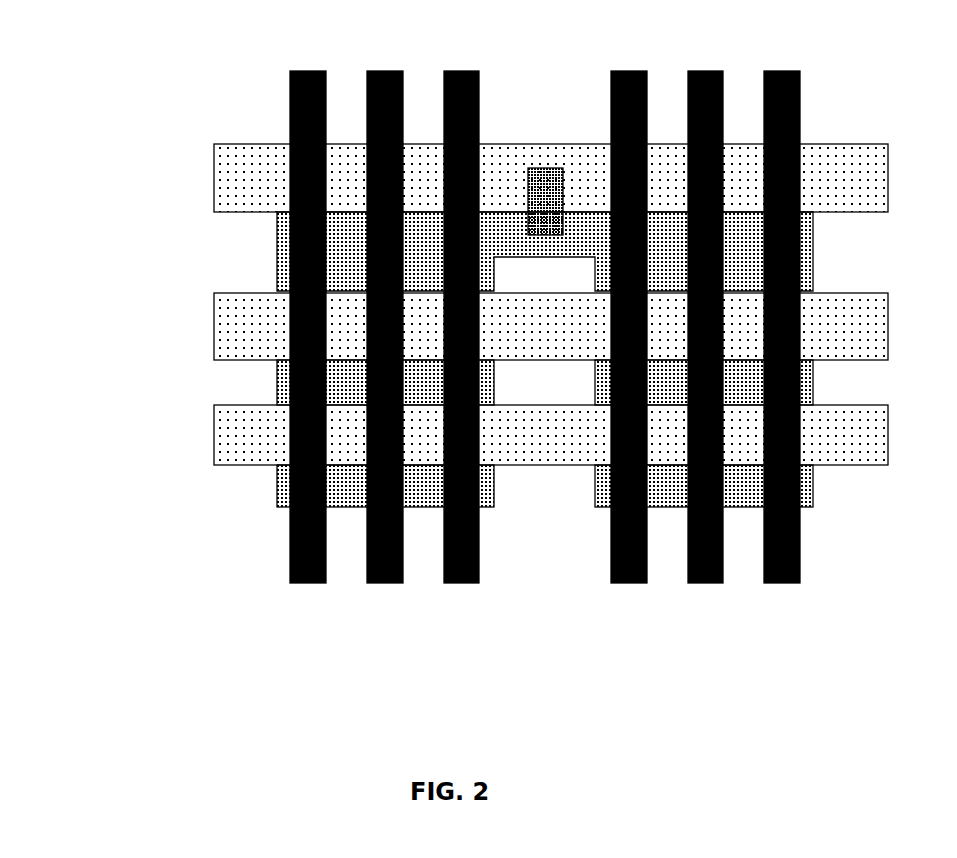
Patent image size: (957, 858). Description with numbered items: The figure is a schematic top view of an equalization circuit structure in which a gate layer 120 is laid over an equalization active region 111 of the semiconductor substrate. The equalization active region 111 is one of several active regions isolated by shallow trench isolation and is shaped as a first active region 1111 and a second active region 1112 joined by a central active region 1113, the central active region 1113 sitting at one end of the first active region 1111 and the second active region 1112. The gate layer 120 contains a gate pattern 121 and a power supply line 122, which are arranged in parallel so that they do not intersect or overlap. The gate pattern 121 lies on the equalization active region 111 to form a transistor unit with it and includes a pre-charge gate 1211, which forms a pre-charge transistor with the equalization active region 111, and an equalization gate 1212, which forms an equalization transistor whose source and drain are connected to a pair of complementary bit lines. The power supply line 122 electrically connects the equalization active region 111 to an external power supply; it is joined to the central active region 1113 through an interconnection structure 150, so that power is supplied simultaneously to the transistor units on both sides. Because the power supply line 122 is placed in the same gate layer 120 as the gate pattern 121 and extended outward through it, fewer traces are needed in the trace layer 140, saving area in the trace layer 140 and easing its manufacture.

The equalization active region 111 is at (545, 452).
The first active region 1111 is at (488, 491).
The second active region 1112 is at (701, 504).
The central active region 1113 is at (515, 233).
The gate layer 120 is at (461, 299).
The gate pattern 121 is at (482, 379).
The pre-charge gate 1211 is at (248, 327).
The equalization gate 1212 is at (248, 430).
The power supply line 122 is at (248, 188).
The trace layer 140 is at (310, 71).
The interconnection structure 150 is at (548, 177).